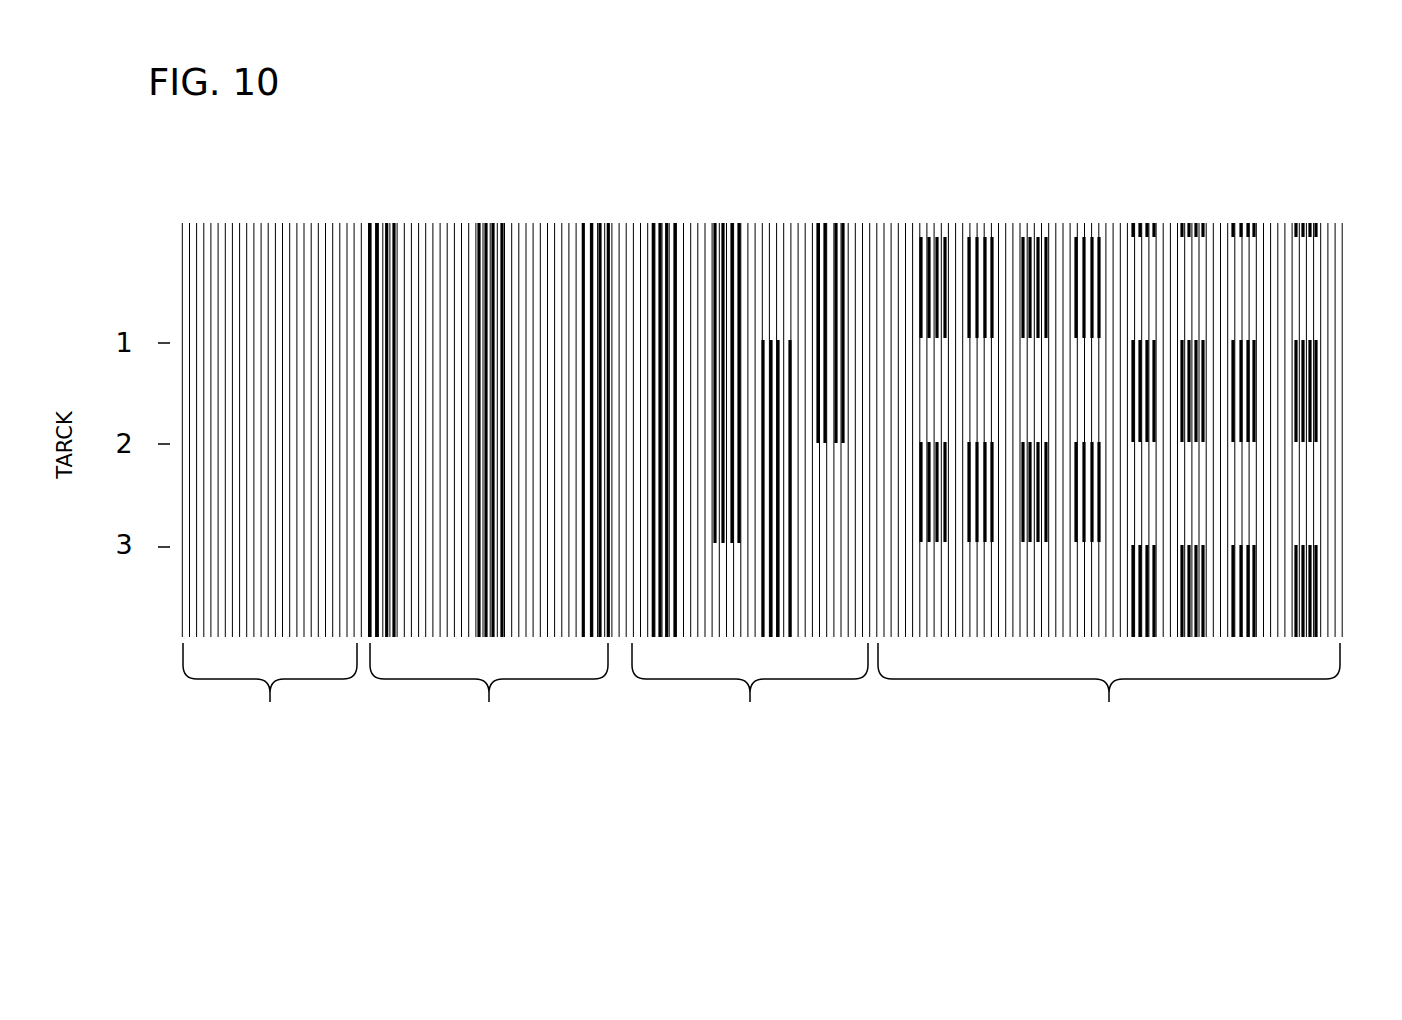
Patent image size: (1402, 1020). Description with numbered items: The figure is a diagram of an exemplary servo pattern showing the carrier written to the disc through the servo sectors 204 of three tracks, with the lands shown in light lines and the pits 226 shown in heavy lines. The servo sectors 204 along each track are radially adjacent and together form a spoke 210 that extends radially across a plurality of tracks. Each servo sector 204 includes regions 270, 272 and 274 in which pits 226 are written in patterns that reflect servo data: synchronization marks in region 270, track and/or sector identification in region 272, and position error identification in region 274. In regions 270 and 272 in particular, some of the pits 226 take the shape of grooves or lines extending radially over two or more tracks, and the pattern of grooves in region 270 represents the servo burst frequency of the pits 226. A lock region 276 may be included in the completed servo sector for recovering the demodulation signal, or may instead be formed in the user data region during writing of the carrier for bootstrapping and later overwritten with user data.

The servo sector 204 is at (1343, 392).
The pit 226 is at (395, 290).
The spoke 210 is at (910, 718).
The lock region 276 is at (270, 690).
The region 270 is at (489, 690).
The region 272 is at (750, 690).
The region 274 is at (1109, 690).